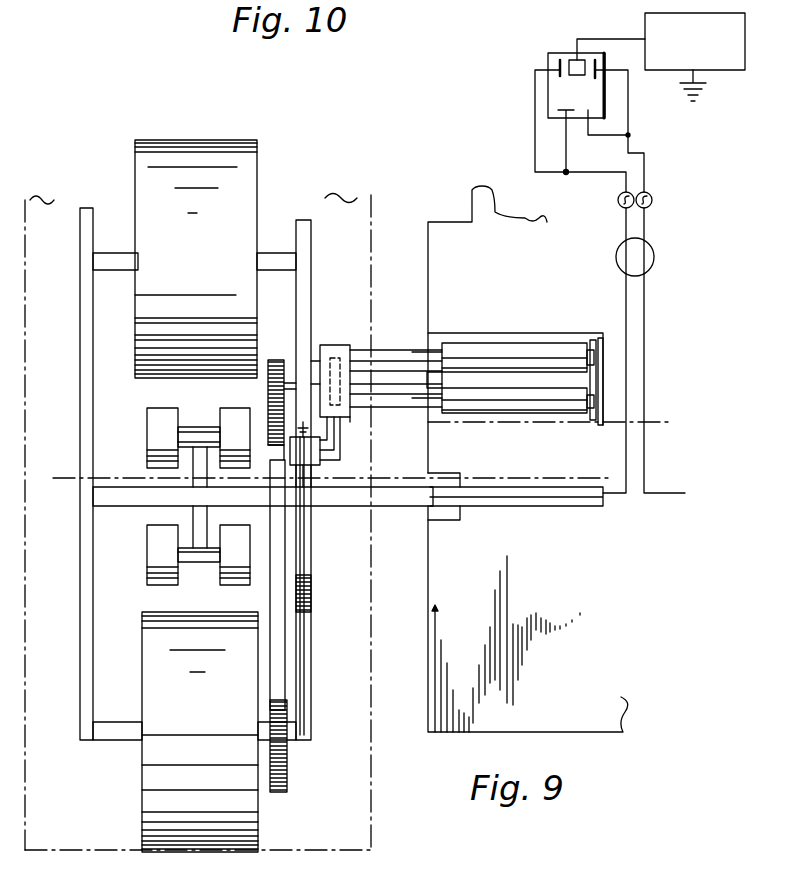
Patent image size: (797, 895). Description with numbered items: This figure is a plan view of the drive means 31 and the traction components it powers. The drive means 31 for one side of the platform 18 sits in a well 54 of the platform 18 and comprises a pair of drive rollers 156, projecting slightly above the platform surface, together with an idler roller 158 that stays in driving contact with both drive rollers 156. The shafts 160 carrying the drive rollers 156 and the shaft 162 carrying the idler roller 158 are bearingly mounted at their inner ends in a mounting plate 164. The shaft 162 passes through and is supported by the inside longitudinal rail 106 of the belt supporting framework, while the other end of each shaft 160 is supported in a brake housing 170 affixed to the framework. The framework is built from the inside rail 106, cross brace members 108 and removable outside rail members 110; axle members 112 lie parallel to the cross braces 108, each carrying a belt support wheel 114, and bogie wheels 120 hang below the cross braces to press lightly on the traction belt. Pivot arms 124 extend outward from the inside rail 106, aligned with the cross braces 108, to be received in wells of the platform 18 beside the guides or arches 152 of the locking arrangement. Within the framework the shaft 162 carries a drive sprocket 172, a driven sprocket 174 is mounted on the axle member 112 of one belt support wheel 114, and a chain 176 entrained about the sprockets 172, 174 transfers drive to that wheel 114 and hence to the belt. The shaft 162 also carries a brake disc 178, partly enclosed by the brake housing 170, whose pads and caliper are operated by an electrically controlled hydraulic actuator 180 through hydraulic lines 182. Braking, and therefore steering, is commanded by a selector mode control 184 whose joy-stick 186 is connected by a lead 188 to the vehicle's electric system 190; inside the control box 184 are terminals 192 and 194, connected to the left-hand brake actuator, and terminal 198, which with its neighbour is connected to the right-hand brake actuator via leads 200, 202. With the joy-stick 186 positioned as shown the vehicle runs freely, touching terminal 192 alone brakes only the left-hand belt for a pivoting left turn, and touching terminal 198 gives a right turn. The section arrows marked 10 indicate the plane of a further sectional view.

The section line 10- 10 is at (80, 478).
The platform 18 is at (445, 228).
The drive means 31 is at (528, 333).
The opposed wells 54 is at (430, 352).
The inside longitudinal rail 106 is at (304, 226).
The cross brace members 108 is at (125, 508).
The outside rail members 110 is at (80, 318).
The axle members 112 is at (111, 262).
The belt support wheel 114 is at (240, 180).
The bogie wheels 120 is at (148, 418).
The pivot arms 124 is at (396, 510).
The guide or arch 152 is at (444, 520).
The drive rollers 156 is at (548, 398).
The idler roller 158 is at (598, 384).
The shafts 160 is at (385, 352).
The shaft 162 is at (420, 362).
The mounting plate 164 is at (605, 407).
The brake housing 170 is at (330, 345).
The drive sprocket 172 is at (267, 384).
The driven sprocket 174 is at (286, 768).
The chain 176 is at (276, 657).
The brake disc 178 is at (350, 428).
The electrically operated hydraulic actuator 180 is at (318, 470).
The lines 182 is at (325, 430).
The selector mode control 184 is at (548, 58).
The joy-stick 186 is at (577, 60).
The lead 188 is at (623, 39).
The vehicle's electric system 190 is at (600, 120).
The terminal 192 is at (558, 72).
The terminal 194 is at (560, 112).
The terminal 198 is at (602, 72).
The lead 200 is at (620, 222).
The lead 202 is at (647, 220).